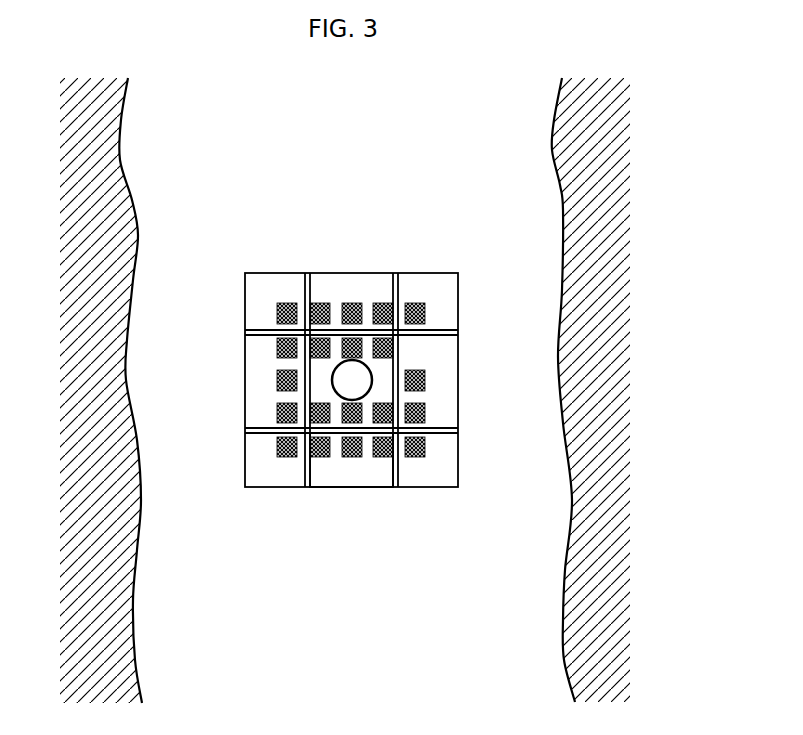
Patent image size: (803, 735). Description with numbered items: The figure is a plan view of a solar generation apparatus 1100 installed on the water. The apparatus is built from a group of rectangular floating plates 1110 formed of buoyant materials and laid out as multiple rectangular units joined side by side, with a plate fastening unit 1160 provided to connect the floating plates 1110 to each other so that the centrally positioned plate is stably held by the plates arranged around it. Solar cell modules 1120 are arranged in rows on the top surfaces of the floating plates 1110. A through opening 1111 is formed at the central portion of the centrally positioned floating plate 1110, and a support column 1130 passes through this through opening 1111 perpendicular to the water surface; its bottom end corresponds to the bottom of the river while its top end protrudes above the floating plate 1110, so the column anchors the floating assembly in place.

The solar generation apparatus 1100 is at (300, 263).
The floating plate 1110 is at (335, 488).
The through opening 1111 is at (372, 375).
The solar cell module 1120 is at (417, 301).
The support column 1130 is at (366, 350).
The plate fastening unit 1160 is at (393, 488).